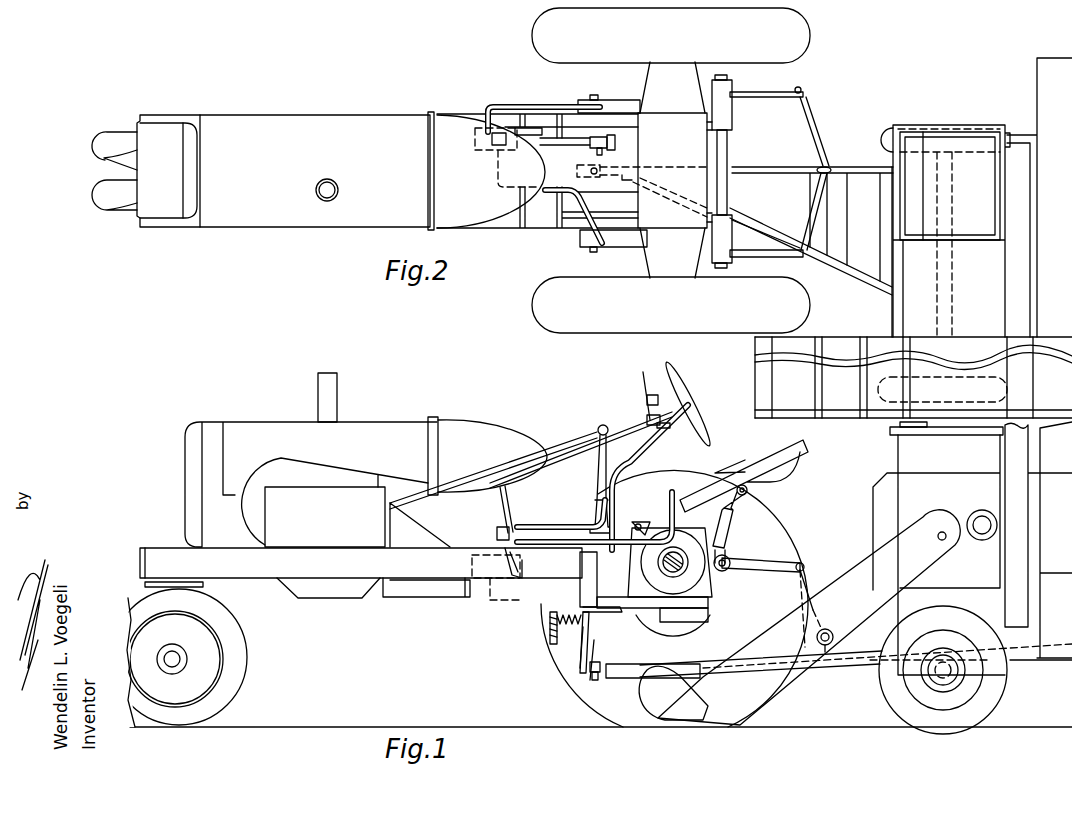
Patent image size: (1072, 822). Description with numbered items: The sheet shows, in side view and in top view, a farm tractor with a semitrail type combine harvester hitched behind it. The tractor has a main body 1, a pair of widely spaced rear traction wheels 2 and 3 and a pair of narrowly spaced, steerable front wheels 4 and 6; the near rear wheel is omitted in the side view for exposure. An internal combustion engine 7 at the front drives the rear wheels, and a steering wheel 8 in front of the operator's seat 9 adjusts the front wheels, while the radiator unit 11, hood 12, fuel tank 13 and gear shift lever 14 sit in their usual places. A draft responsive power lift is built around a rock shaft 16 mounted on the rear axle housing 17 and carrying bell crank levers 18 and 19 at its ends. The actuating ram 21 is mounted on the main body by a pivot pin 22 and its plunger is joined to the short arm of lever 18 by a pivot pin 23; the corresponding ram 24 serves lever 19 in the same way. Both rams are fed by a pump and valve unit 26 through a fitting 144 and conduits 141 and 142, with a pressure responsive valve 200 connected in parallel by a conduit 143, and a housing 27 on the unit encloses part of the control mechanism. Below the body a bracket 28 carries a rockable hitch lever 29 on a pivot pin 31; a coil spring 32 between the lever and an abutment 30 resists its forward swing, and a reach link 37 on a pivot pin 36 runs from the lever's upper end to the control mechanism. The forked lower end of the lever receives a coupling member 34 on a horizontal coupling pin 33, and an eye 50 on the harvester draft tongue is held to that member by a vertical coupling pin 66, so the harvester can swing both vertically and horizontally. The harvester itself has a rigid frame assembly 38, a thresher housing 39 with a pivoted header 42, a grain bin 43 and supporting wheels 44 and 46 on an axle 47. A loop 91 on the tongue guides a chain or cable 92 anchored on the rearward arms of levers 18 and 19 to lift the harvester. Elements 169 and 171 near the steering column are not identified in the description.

In FIG. 2, the main body 1 is at (378, 157).
In FIG. 1, the main body 1 is at (362, 564).
In FIG. 2, the rear traction wheel 2 is at (534, 312).
In FIG. 2, the rear traction wheel 3 is at (532, 33).
In FIG. 1, the rear traction wheel 3 is at (774, 695).
In FIG. 2, the front wheel 4 is at (93, 196).
In FIG. 1, the front wheel 4 is at (243, 688).
In FIG. 2, the front wheel 6 is at (93, 146).
In FIG. 1, the internal combustion engine 7 is at (360, 480).
In FIG. 1, the steering wheel 8 is at (686, 390).
In FIG. 1, the operator's seat 9 is at (762, 466).
In FIG. 2, the radiator unit 11 is at (186, 160).
In FIG. 1, the radiator unit 11 is at (184, 470).
In FIG. 2, the hood 12 is at (258, 114).
In FIG. 1, the hood 12 is at (272, 420).
In FIG. 2, the fuel tank 13 is at (491, 171).
In FIG. 1, the fuel tank 13 is at (490, 430).
In FIG. 1, the gear shift lever 14 is at (598, 428).
In FIG. 2, the rock shaft 16 is at (731, 146).
In FIG. 1, the rock shaft 16 is at (727, 556).
In FIG. 2, the rear axle housing 17 is at (666, 116).
In FIG. 1, the rear axle housing 17 is at (690, 520).
In FIG. 2, the bell crank lever 18 is at (765, 248).
In FIG. 1, the bell crank lever 18 is at (768, 556).
In FIG. 2, the bell crank lever 19 is at (797, 87).
In FIG. 2, the actuating ram 21 is at (612, 247).
In FIG. 1, the actuating ram 21 is at (665, 610).
In FIG. 2, the pivot pin 22 is at (590, 253).
In FIG. 1, the pivot pin 22 is at (580, 575).
In FIG. 1, the pivot pin 23 is at (712, 600).
In FIG. 2, the actuating ram 24 is at (606, 99).
In FIG. 2, the pump and valve unit 26 is at (474, 140).
In FIG. 1, the pump and valve unit 26 is at (470, 563).
In FIG. 2, the housing 27 is at (525, 130).
In FIG. 1, the housing 27 is at (512, 585).
In FIG. 1, the bracket 28 is at (565, 650).
In FIG. 1, the hitch lever 29 is at (598, 650).
In FIG. 1, the abutment 30 is at (557, 622).
In FIG. 1, the pivot pin 31 is at (575, 660).
In FIG. 1, the coil spring 32 is at (557, 640).
In FIG. 1, the coupling pin 33 is at (585, 672).
In FIG. 2, the coupling member 34 is at (592, 185).
In FIG. 1, the coupling member 34 is at (600, 680).
In FIG. 1, the pivot pin 36 is at (592, 611).
In FIG. 1, the reach link 37 is at (552, 614).
In FIG. 2, the frame assembly 38 is at (892, 296).
In FIG. 1, the frame assembly 38 is at (842, 660).
In FIG. 2, the thresher housing 39 is at (990, 299).
In FIG. 1, the thresher housing 39 is at (970, 499).
In FIG. 1, the header 42 is at (857, 418).
In FIG. 2, the grain bin 43 is at (962, 144).
In FIG. 1, the grain bin 43 is at (897, 460).
In FIG. 1, the supporting wheel 44 is at (1000, 392).
In FIG. 2, the supporting wheel 46 is at (885, 128).
In FIG. 2, the axle 47 is at (950, 270).
In FIG. 1, the axle 47 is at (943, 675).
In FIG. 1, the eye 50 is at (603, 668).
In FIG. 2, the coupling pin 66 is at (590, 168).
In FIG. 1, the coupling pin 66 is at (595, 678).
In FIG. 2, the loop 91 is at (828, 166).
In FIG. 1, the loop 91 is at (833, 635).
In FIG. 2, the chain or cable 92 is at (812, 120).
In FIG. 1, the chain or cable 92 is at (805, 590).
In FIG. 2, the conduit 141 is at (575, 218).
In FIG. 1, the conduit 141 is at (556, 538).
In FIG. 2, the conduit 142 is at (500, 105).
In FIG. 1, the conduit 142 is at (500, 520).
In FIG. 2, the conduit 143 is at (548, 142).
In FIG. 1, the conduit 143 is at (527, 524).
In FIG. 2, the fitting 144 is at (495, 145).
In FIG. 1, the fitting 144 is at (498, 525).
In FIG. 1, the throttle rod 169 is at (645, 378).
In FIG. 1, the bracket 171 is at (662, 428).
In FIG. 2, the pressure responsive valve 200 is at (618, 141).
In FIG. 1, the pressure responsive valve 200 is at (630, 520).